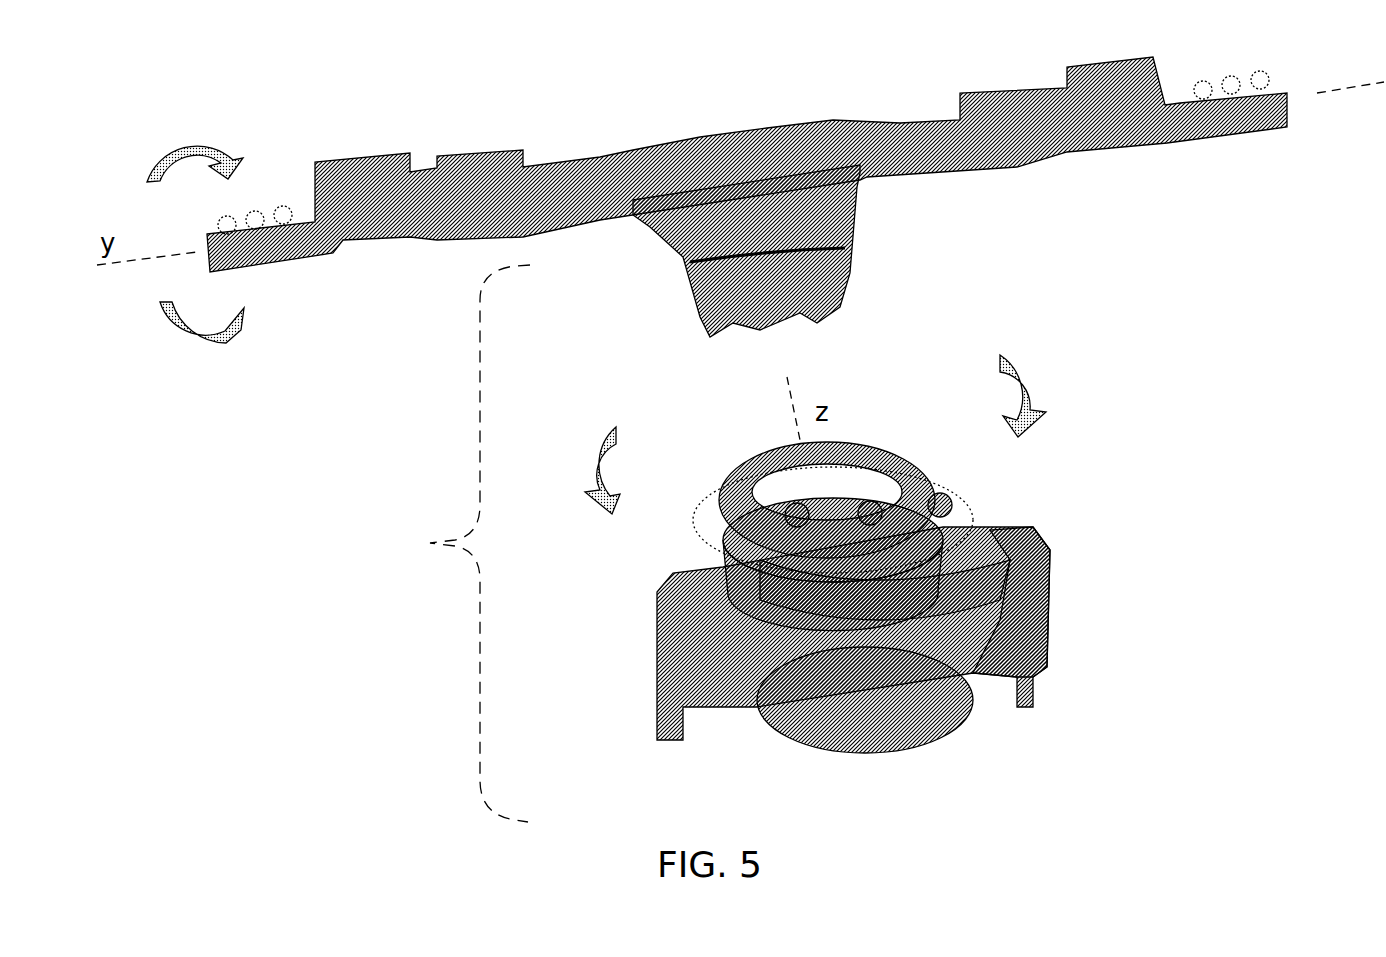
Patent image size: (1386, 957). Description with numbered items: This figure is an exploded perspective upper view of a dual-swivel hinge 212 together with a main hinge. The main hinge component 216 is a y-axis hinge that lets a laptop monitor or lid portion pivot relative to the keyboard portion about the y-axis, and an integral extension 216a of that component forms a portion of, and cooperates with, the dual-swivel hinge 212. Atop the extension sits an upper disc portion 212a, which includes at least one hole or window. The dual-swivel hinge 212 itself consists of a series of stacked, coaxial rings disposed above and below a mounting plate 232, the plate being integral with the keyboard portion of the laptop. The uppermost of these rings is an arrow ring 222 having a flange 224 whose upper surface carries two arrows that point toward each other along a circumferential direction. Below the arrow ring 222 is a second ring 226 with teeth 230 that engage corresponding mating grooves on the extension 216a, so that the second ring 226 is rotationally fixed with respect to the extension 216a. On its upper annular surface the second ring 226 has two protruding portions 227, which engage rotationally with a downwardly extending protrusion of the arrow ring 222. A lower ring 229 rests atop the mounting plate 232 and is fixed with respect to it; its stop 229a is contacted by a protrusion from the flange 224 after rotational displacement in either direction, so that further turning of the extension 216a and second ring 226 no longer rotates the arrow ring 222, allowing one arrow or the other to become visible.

The dual-swivel hinge 212 is at (456, 543).
The upper disc portion 212a is at (810, 252).
The main hinge component 216 is at (1010, 143).
The integral extension 216a is at (713, 303).
The arrow ring 222 is at (873, 450).
The flange 224 is at (947, 500).
The second ring 226 is at (745, 581).
The protruding portions 227 is at (723, 562).
The lower ring 229 is at (744, 628).
The stop 229a is at (959, 602).
The teeth 230 is at (870, 512).
The mounting plate 232 is at (1022, 623).